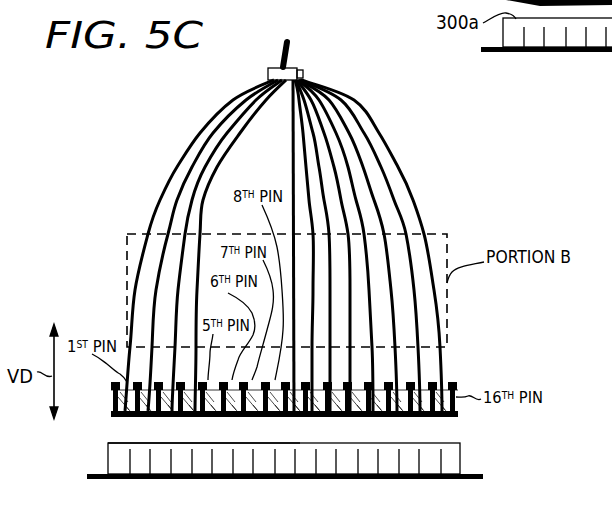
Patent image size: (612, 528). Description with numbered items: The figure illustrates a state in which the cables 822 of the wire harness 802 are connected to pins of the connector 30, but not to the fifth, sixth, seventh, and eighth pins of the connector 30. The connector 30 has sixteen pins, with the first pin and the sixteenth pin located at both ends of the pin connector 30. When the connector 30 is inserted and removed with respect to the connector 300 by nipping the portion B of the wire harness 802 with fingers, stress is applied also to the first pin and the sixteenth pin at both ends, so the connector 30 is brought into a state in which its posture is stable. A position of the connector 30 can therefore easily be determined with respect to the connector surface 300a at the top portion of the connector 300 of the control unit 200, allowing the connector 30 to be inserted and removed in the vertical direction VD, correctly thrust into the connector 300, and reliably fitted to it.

The wire harness 802 is at (379, 102).
The cables 822 is at (403, 187).
The connector 30 is at (458, 382).
The connector 300 is at (462, 456).
The connector surface 300a is at (128, 442).
The control unit 200 is at (471, 475).